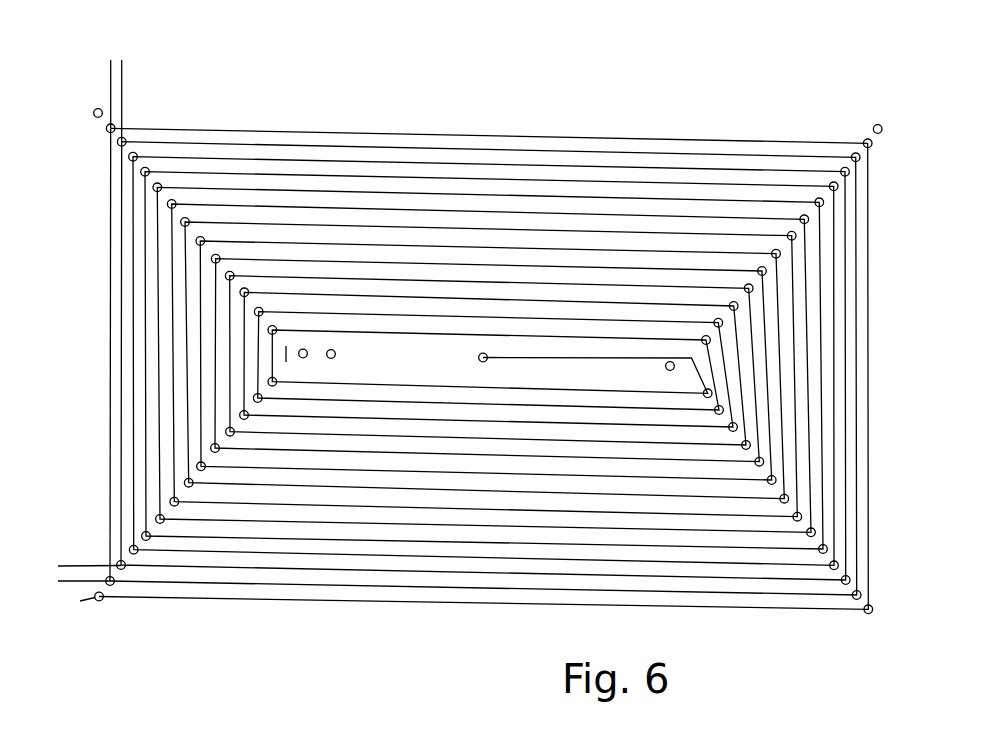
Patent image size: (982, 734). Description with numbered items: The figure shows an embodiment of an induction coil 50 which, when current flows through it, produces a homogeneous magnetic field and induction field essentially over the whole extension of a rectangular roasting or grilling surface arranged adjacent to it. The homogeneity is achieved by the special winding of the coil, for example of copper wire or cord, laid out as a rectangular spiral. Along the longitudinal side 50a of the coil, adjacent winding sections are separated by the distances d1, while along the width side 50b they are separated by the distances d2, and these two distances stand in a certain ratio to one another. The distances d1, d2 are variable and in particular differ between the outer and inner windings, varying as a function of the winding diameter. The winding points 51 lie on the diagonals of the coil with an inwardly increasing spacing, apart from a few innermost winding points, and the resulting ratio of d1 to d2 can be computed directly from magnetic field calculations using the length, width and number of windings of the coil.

The induction coil 50 is at (785, 115).
The longitudinal side of the coil 50a is at (428, 148).
The width side of the coil 50b is at (110, 308).
The winding points 51 is at (731, 303).
The distance between two winding sections on the longitudinal side d1 is at (64, 530).
The distance between two winding sections on the width side d2 is at (162, 71).